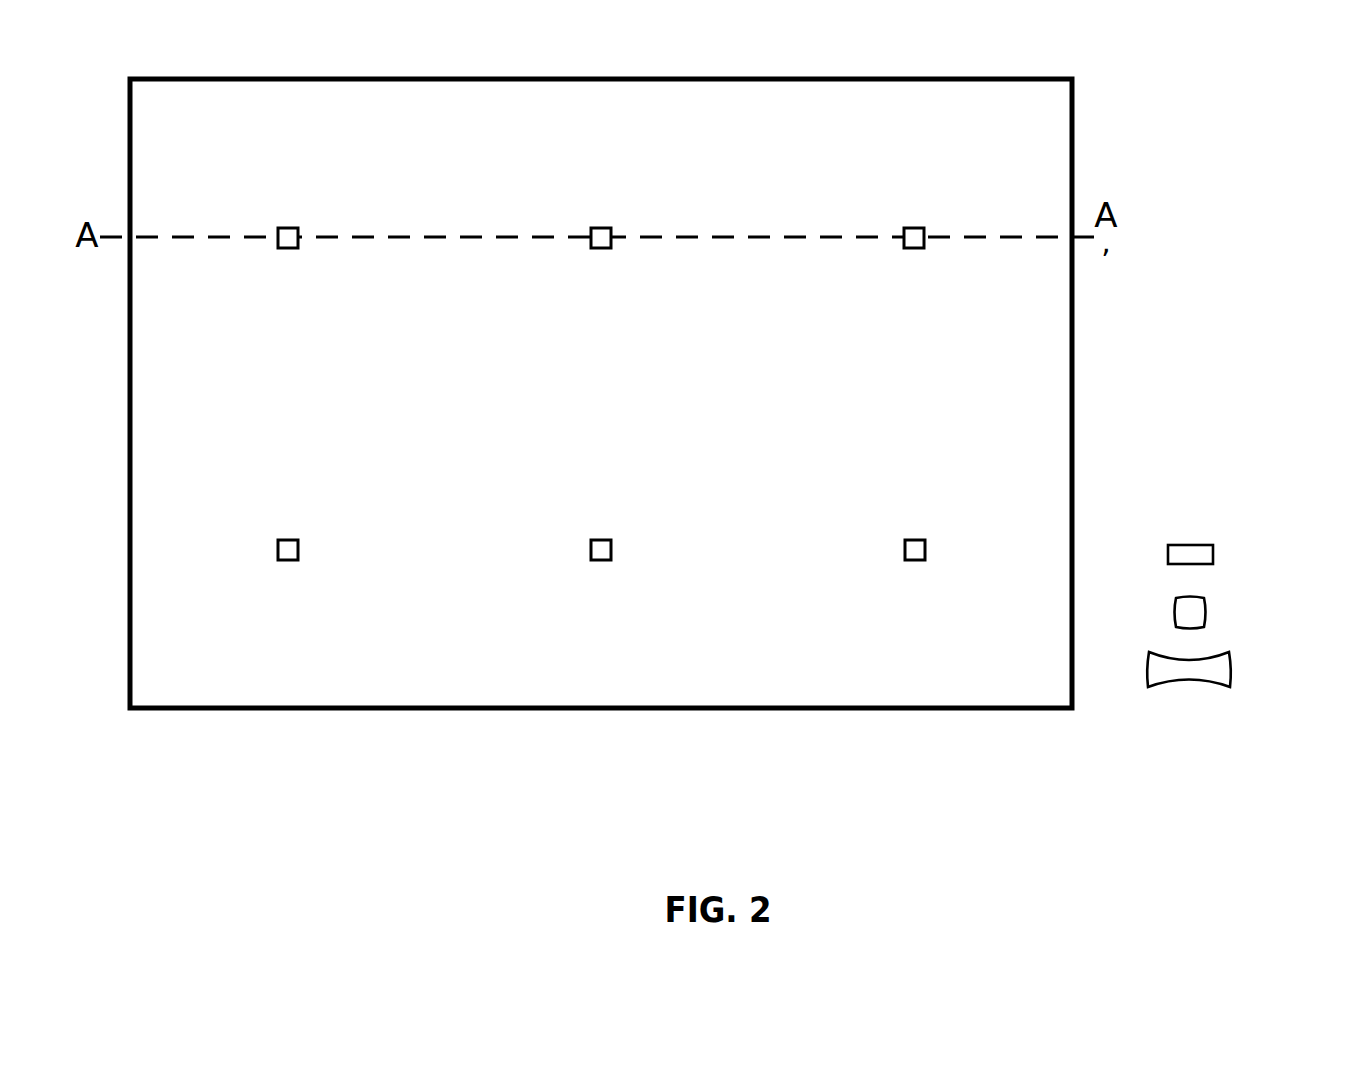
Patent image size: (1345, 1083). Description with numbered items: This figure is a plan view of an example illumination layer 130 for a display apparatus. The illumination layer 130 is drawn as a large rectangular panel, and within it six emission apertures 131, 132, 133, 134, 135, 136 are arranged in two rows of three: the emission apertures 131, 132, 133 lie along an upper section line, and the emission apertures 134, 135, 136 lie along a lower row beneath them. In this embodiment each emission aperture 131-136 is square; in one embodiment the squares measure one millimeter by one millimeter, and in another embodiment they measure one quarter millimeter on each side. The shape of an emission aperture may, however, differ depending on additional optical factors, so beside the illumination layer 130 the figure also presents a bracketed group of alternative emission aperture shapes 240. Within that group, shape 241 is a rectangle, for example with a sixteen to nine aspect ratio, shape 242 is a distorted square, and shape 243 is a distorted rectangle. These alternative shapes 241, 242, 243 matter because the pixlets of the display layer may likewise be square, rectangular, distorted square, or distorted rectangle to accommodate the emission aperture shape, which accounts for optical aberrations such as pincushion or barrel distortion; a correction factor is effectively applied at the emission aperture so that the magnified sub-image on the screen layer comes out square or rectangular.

The illumination layer 130 is at (466, 79).
The emission aperture 131 is at (297, 227).
The emission aperture 132 is at (592, 228).
The emission aperture 133 is at (905, 228).
The emission aperture 134 is at (288, 540).
The emission aperture 135 is at (597, 540).
The emission aperture 136 is at (914, 540).
The alternative emission aperture shapes 240 is at (1118, 533).
The rectangular emission aperture shape 241 is at (1213, 557).
The distorted square emission aperture shape 242 is at (1205, 622).
The distorted rectangle emission aperture shape 243 is at (1230, 678).